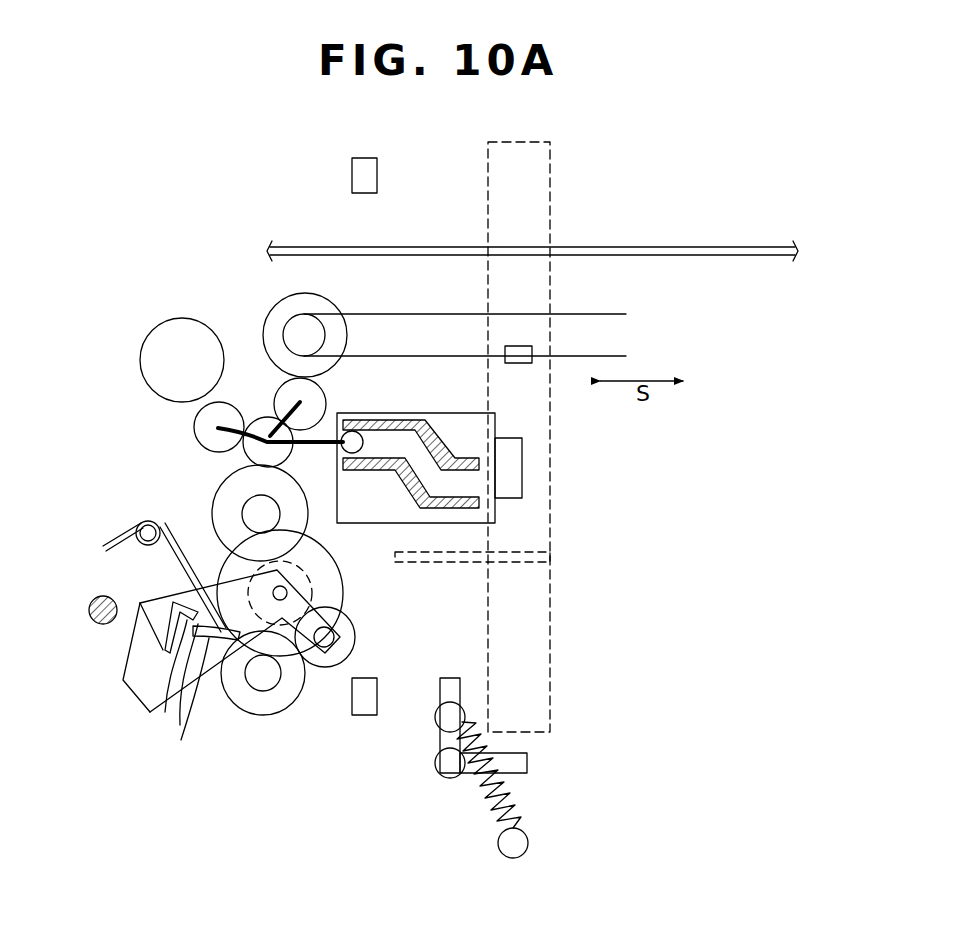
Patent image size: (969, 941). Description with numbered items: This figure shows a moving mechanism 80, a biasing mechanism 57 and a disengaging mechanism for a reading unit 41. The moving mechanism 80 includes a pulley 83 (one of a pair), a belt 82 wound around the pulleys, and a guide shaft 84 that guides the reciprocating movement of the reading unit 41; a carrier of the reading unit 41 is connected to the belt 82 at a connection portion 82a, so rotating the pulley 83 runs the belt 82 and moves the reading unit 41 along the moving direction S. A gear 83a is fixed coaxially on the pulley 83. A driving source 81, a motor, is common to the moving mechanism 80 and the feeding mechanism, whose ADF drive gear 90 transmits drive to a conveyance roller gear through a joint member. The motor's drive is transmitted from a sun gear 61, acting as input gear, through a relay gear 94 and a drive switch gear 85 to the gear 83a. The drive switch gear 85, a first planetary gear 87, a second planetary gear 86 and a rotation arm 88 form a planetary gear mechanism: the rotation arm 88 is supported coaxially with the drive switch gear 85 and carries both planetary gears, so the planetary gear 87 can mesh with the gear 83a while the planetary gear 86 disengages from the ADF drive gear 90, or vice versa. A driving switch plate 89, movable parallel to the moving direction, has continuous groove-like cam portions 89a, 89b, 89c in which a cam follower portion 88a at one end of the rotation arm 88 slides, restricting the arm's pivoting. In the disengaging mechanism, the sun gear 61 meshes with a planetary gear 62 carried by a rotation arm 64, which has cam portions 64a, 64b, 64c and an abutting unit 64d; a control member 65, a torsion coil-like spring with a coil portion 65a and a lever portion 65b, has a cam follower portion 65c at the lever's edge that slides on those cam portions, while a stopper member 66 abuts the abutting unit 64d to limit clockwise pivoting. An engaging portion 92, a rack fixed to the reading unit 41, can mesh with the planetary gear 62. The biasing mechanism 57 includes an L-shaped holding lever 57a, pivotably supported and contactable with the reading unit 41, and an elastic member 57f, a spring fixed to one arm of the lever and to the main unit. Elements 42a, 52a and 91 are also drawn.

The reading unit 41 is at (513, 140).
The moving mechanism 80 is at (683, 197).
The guide shaft 84 is at (770, 245).
The belt 82 is at (605, 312).
The connection portion 82a is at (518, 363).
The guide member 42a is at (365, 158).
The ADF drive gear 90 is at (183, 318).
The gear 83a is at (280, 301).
The pulley 83 is at (283, 330).
The first planetary gear 87 is at (278, 385).
The drive switch gear 85 is at (262, 423).
The second planetary gear 86 is at (195, 427).
The rotation arm 88 is at (318, 445).
The cam follower portion 88a is at (355, 453).
The relay gear 94 is at (215, 482).
The driving switch plate 89 is at (415, 481).
The cam portion 89a is at (377, 422).
The cam portion 89b is at (418, 458).
The cam portion 89c is at (463, 480).
The engaging portion 52a is at (522, 467).
The engaging portion 92 is at (447, 562).
The sun gear 61 is at (347, 593).
The planetary gear 62 is at (355, 637).
The driving source 81 is at (275, 717).
The control member 65 is at (146, 612).
The coil portion 65a is at (125, 530).
The lever portion 65b is at (185, 575).
The cam follower portion 65c is at (217, 641).
The stopper member 66 is at (89, 610).
The rotation arm 64 is at (130, 681).
The cam portion 64a is at (182, 712).
The cam portion 64b is at (145, 640).
The cam portion 64c is at (158, 703).
The abutting unit 64d is at (127, 665).
The biasing mechanism 57 is at (539, 789).
The holding lever 57a is at (527, 763).
The elastic member 57f is at (515, 807).
The unit 91 is at (245, 817).